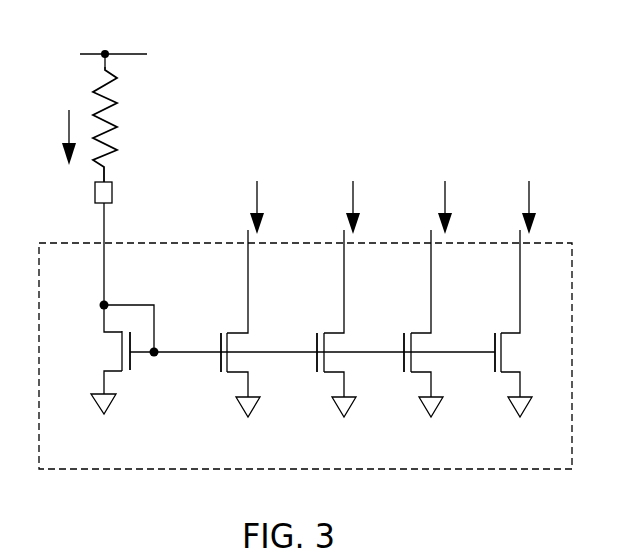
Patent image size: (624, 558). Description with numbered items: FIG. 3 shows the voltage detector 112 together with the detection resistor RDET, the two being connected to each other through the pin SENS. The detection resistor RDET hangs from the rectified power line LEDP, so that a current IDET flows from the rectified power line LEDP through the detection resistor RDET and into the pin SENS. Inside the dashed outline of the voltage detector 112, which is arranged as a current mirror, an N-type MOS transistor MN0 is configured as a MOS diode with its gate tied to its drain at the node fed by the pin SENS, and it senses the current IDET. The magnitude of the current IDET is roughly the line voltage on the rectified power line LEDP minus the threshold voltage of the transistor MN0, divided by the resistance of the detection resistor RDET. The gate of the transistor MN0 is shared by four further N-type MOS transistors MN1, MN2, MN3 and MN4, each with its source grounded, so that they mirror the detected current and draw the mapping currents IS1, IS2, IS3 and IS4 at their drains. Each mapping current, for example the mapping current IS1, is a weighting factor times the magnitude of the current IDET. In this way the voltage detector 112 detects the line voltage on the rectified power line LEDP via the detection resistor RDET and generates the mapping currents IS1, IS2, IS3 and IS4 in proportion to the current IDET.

The voltage detector 112 is at (246, 460).
The rectified power line LEDP is at (113, 47).
The detection resistor RDET is at (129, 124).
The current IDET is at (51, 137).
The pin SENS is at (135, 193).
The N-type MOS transistor MN0 is at (96, 359).
The N-type MOS transistor MN1 is at (218, 323).
The N-type MOS transistor MN2 is at (319, 323).
The N-type MOS transistor MN3 is at (405, 323).
The N-type MOS transistor MN4 is at (495, 323).
The mapping current IS1 is at (269, 207).
The mapping current IS2 is at (365, 207).
The mapping current IS3 is at (456, 207).
The mapping current IS4 is at (540, 207).